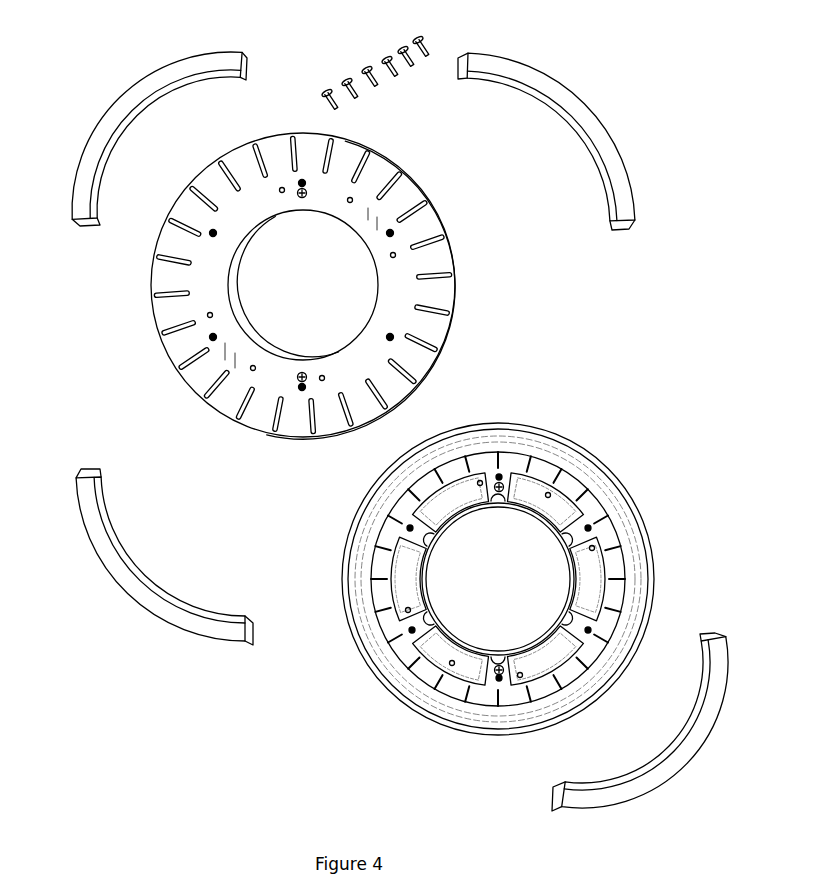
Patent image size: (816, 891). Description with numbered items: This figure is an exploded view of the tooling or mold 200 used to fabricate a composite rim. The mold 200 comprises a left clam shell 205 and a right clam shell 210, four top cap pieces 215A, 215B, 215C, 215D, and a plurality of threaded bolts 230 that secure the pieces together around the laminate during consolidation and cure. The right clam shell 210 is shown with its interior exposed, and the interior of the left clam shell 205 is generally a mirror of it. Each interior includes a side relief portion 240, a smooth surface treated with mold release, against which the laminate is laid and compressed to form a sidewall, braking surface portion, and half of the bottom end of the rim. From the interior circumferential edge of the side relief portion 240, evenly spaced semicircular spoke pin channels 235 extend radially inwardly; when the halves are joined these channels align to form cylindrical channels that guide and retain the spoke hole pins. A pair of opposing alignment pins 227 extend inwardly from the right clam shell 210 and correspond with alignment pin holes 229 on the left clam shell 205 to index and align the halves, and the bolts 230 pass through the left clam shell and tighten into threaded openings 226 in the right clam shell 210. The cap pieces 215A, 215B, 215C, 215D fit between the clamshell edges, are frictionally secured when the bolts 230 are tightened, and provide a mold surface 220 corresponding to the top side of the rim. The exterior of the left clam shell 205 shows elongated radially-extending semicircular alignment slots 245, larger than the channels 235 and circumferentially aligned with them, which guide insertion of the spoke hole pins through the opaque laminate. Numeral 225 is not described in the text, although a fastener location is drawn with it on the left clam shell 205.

The mold 200 is at (168, 48).
The left clam shell 205 is at (142, 327).
The right clam shell 210 is at (447, 740).
The top cap piece 215A is at (105, 137).
The top cap piece 215B is at (612, 144).
The top cap piece 215C is at (668, 762).
The top cap piece 215D is at (162, 618).
The mold surface 220 is at (155, 104).
The fastener hole 225 is at (213, 238).
The threaded openings 226 is at (410, 528).
The alignment pins 227 is at (499, 490).
The alignment pin holes 229 is at (300, 192).
The bolts 230 is at (418, 30).
The spoke pin channels 235 is at (615, 565).
The side relief portion 240 is at (603, 491).
The alignment slots 245 is at (413, 197).